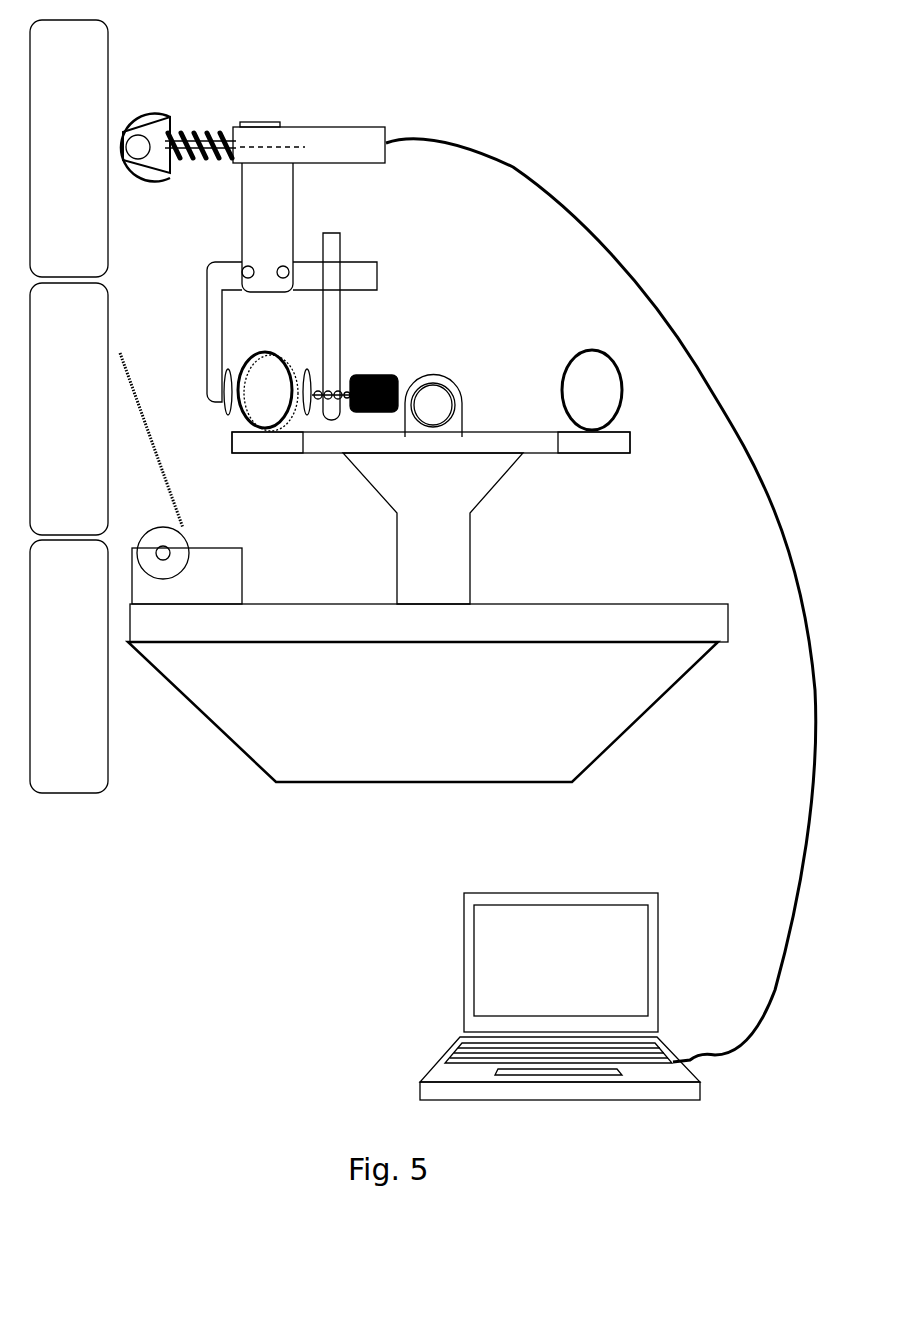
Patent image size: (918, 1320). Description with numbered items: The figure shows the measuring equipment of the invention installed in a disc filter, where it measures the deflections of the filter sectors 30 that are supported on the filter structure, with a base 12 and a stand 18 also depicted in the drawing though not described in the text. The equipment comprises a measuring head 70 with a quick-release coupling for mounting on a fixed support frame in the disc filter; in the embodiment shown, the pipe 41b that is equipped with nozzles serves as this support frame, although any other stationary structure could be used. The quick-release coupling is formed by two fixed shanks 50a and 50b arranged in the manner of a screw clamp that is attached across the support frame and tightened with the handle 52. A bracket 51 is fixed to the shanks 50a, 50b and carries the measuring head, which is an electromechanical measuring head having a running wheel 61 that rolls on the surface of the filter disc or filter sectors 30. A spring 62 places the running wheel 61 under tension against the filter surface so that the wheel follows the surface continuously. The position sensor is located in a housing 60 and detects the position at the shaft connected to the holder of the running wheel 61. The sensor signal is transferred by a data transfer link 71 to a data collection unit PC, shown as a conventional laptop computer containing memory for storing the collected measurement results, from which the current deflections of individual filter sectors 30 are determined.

The base 12 is at (434, 741).
The support stand 18 is at (167, 472).
The filter sector 30 is at (76, 138).
The pipe equipped with nozzles 41b is at (263, 402).
The fixed shank 50a is at (217, 330).
The fixed shank 50b is at (330, 248).
The bracket 51 is at (281, 234).
The handle 52 is at (368, 390).
The housing 60 is at (356, 160).
The running wheel 61 is at (137, 115).
The spring 62 is at (208, 132).
The measuring head 70 is at (371, 262).
The data transfer link 71 is at (762, 492).
The data collection unit PC is at (432, 1077).